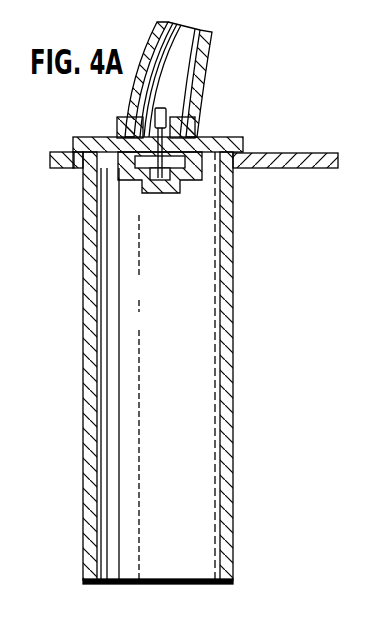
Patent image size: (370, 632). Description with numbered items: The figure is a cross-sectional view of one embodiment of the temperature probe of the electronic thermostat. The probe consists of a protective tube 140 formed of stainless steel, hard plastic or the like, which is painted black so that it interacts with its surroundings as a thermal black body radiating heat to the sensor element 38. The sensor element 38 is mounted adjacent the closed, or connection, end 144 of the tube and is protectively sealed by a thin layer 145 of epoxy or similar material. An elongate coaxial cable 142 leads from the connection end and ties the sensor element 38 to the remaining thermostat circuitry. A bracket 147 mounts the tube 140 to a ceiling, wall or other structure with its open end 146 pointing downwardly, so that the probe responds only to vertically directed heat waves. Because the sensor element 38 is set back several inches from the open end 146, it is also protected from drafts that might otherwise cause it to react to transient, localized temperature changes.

The sensor element 38 is at (165, 193).
The protective tube 140 is at (233, 304).
The elongate coaxial cable 142 is at (208, 72).
The closed end 144 is at (225, 135).
The thin layer of epoxy 145 is at (202, 165).
The open end 146 is at (188, 584).
The bracket 147 is at (300, 153).